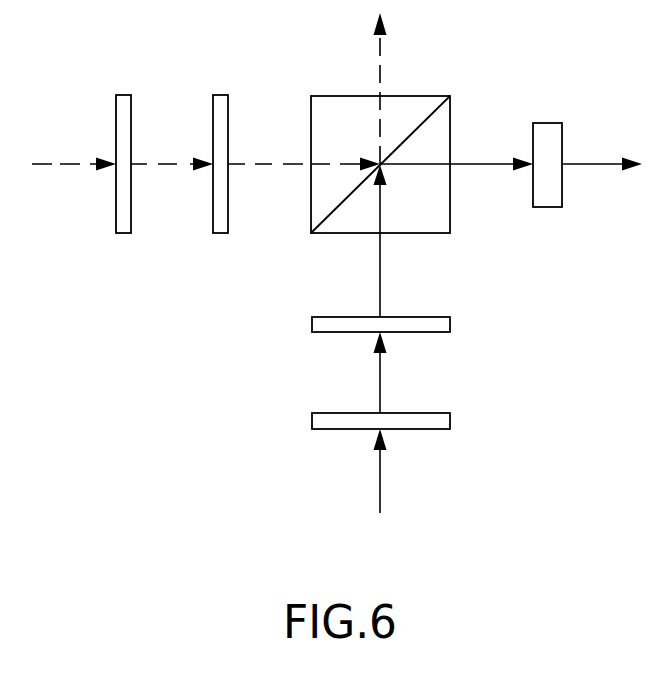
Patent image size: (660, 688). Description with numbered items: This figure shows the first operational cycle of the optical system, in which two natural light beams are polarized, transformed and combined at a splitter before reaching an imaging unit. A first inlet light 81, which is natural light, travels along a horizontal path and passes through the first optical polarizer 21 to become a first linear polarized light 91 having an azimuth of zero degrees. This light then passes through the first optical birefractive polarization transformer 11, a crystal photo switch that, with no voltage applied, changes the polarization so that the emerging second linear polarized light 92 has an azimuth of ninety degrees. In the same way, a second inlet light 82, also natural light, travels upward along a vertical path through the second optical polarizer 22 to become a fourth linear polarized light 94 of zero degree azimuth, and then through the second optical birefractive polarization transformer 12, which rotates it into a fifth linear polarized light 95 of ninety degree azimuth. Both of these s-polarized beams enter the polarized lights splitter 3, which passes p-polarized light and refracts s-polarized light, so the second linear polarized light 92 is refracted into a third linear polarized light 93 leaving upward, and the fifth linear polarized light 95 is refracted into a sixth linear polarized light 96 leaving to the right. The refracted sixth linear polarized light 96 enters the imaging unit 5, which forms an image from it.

The polarized lights splitter 3 is at (422, 96).
The imaging unit 5 is at (542, 123).
The first optical birefractive polarization transformer 11 is at (215, 95).
The second optical birefractive polarization transformer 12 is at (450, 322).
The first optical polarizer 21 is at (118, 95).
The second optical polarizer 22 is at (450, 420).
The first inlet light 81 is at (78, 164).
The second inlet light 82 is at (380, 470).
The first linear polarized light 91 is at (175, 164).
The second linear polarized light 92 is at (268, 164).
The third linear polarized light 93 is at (380, 52).
The fourth linear polarized light 94 is at (380, 372).
The fifth linear polarized light 95 is at (380, 275).
The sixth linear polarized light 96 is at (490, 164).